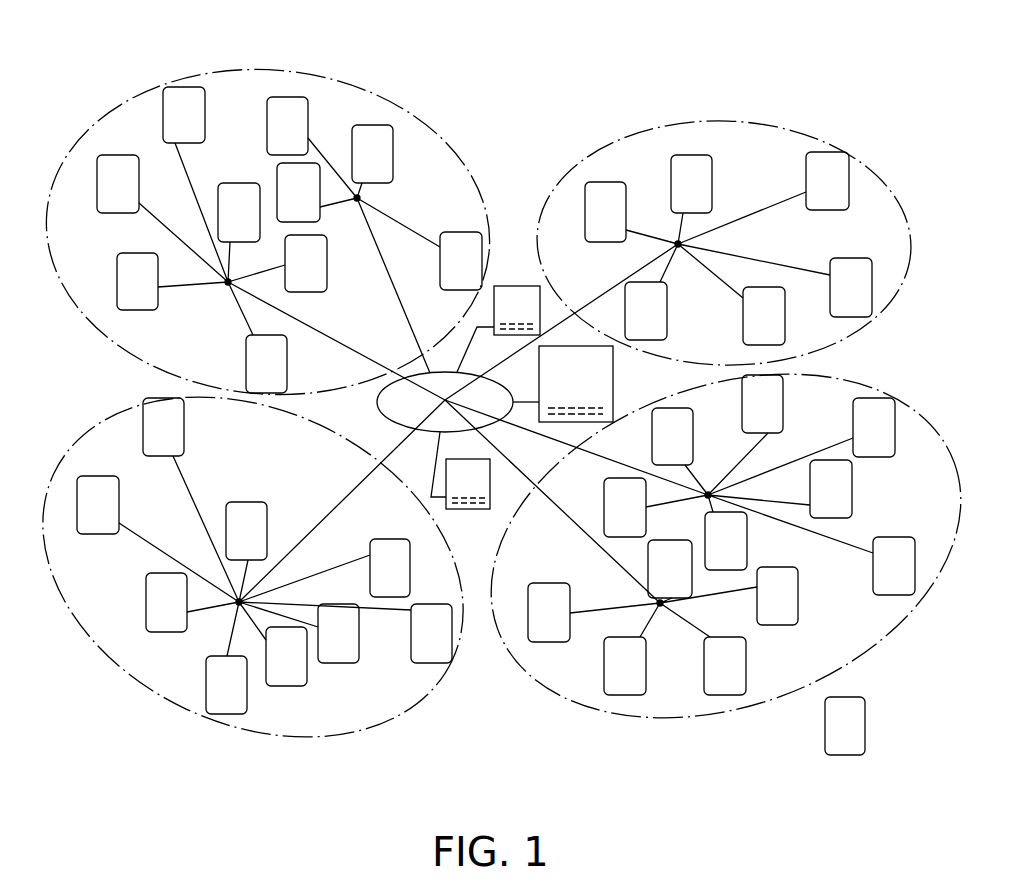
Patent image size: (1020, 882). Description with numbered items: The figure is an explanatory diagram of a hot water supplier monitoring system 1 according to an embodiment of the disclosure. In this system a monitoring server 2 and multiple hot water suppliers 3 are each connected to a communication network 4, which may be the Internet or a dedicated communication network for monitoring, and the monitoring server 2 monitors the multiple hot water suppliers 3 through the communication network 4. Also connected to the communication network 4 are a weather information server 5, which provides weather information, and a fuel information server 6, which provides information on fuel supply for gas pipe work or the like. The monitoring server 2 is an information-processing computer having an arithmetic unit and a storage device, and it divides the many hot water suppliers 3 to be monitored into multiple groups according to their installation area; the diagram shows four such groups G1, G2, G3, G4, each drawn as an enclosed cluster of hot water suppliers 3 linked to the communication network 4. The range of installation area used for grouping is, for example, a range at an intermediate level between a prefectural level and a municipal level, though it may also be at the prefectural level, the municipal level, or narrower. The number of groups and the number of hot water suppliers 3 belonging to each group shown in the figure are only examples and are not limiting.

The hot water supplier monitoring system 1 is at (639, 77).
The monitoring server 2 is at (613, 385).
The hot water suppliers 3 is at (865, 708).
The communication network 4 is at (377, 405).
The weather information server 5 is at (511, 286).
The fuel information server 6 is at (458, 509).
The group G1 is at (452, 151).
The group G2 is at (586, 158).
The group G3 is at (545, 688).
The group G4 is at (445, 688).